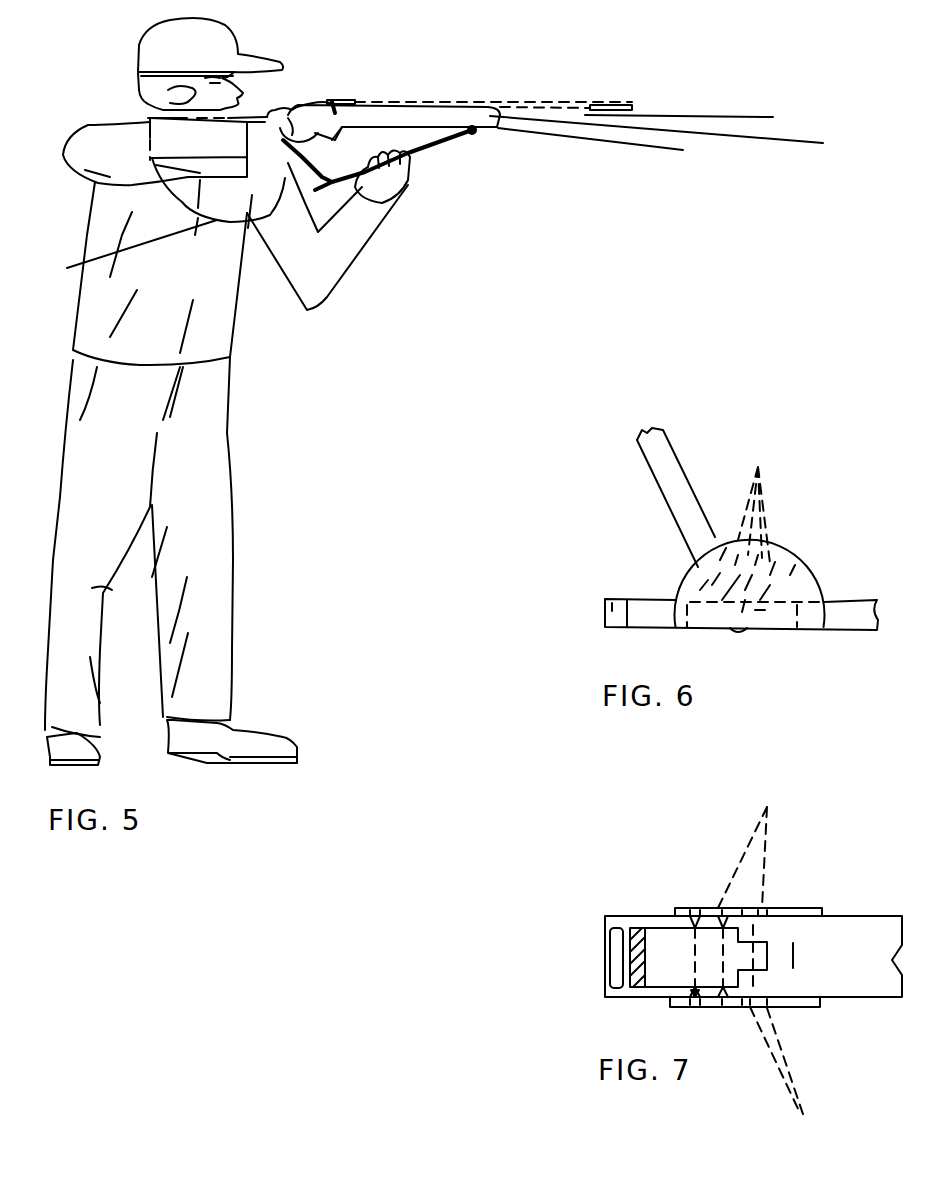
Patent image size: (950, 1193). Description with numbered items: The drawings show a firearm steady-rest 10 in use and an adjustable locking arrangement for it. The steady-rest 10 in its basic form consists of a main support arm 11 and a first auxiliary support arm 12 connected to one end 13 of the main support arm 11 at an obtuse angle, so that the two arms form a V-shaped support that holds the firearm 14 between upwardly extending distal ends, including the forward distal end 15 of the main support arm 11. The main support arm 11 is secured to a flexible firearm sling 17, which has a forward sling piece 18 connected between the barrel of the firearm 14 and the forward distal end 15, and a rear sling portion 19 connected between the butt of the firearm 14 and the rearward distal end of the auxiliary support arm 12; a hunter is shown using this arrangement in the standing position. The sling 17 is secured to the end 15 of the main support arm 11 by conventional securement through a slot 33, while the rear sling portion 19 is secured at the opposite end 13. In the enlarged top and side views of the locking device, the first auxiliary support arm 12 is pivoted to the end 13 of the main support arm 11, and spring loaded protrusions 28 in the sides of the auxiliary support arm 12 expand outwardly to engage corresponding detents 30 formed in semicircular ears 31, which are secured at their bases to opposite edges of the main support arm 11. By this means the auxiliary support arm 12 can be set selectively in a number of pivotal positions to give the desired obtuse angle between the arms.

In FIG. 5, the firearm steady-rest 10 is at (490, 153).
In FIG. 5, the main support arm 11 is at (442, 147).
In FIG. 6, the main support arm 11 is at (855, 603).
In FIG. 7, the main support arm 11 is at (848, 916).
In FIG. 5, the first auxiliary support arm 12 is at (302, 233).
In FIG. 6, the first auxiliary support arm 12 is at (643, 459).
In FIG. 7, the first auxiliary support arm 12 is at (653, 923).
In FIG. 6, the end of main support arm 13 is at (860, 630).
In FIG. 7, the end of main support arm 13 is at (867, 999).
In FIG. 5, the firearm 14 is at (443, 78).
In FIG. 5, the forward distal end 15 is at (613, 147).
In FIG. 5, the flexible firearm sling 17 is at (448, 203).
In FIG. 5, the forward sling piece 18 is at (702, 117).
In FIG. 5, the rear sling portion 19 is at (170, 194).
In FIG. 7, the spring loaded protrusions 28 is at (733, 1057).
In FIG. 6, the detents 30 is at (756, 498).
In FIG. 7, the detents 30 is at (769, 969).
In FIG. 7, the semicircular ears 31 is at (837, 1063).
In FIG. 6, the slot 33 is at (627, 602).
In FIG. 7, the slot 33 is at (620, 960).